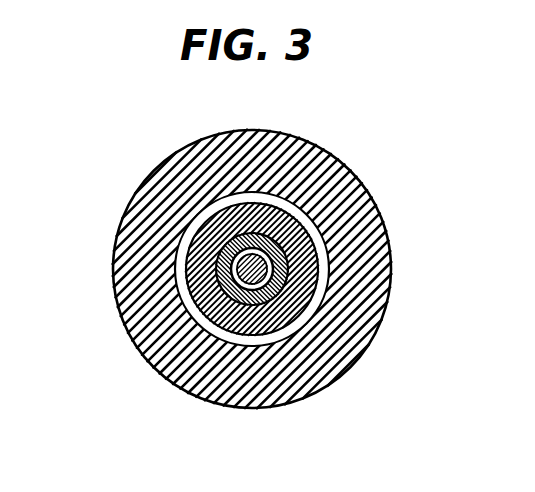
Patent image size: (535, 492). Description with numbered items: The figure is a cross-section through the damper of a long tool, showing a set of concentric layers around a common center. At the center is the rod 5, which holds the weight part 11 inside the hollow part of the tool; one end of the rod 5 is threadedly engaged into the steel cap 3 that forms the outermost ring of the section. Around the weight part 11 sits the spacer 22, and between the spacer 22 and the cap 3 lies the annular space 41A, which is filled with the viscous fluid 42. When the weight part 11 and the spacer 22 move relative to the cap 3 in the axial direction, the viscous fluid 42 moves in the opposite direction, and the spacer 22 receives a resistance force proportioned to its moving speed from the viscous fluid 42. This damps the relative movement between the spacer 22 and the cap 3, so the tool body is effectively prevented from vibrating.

The cap 3 is at (318, 160).
The rod 5 is at (232, 258).
The weight part 11 is at (238, 297).
The spacer 22 is at (207, 222).
The annular space 41A is at (313, 227).
The viscous fluid 42 is at (320, 267).